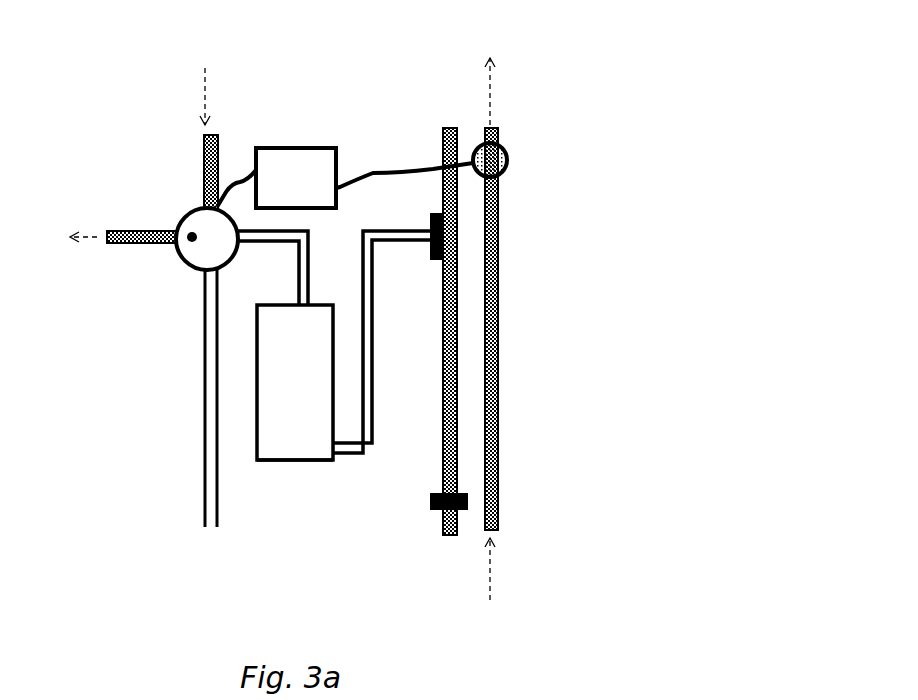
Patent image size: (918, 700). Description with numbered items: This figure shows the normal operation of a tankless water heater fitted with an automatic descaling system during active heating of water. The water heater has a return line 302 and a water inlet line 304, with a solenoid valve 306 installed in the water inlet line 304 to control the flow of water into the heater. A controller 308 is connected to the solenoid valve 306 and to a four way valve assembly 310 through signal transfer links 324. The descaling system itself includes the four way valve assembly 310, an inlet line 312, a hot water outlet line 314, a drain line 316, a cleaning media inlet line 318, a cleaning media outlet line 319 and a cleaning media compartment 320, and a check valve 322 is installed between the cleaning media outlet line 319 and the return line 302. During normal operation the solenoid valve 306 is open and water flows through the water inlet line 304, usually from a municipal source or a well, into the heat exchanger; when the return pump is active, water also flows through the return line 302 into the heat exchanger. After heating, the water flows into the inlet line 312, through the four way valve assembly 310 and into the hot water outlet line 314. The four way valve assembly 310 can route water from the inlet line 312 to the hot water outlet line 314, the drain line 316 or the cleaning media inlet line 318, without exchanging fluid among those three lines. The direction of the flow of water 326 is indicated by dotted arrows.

The return line 302 is at (443, 392).
The water inlet line 304 is at (497, 422).
The solenoid valve 306 is at (508, 157).
The controller 308 is at (295, 148).
The four way valve assembly 310 is at (188, 265).
The inlet line 312 is at (203, 172).
The hot water outlet line 314 is at (140, 242).
The drain line 316 is at (203, 505).
The cleaning media inlet line 318 is at (272, 245).
The cleaning media outlet line 319 is at (350, 460).
The cleaning media compartment 320 is at (267, 447).
The check valve 322 is at (438, 213).
The signal transfer links 324 is at (377, 172).
The direction of the flow of water 326 is at (72, 230).